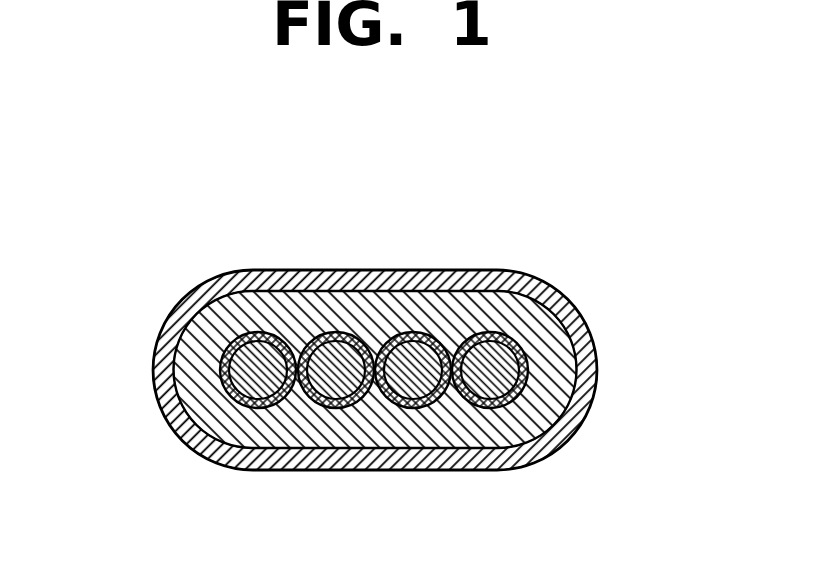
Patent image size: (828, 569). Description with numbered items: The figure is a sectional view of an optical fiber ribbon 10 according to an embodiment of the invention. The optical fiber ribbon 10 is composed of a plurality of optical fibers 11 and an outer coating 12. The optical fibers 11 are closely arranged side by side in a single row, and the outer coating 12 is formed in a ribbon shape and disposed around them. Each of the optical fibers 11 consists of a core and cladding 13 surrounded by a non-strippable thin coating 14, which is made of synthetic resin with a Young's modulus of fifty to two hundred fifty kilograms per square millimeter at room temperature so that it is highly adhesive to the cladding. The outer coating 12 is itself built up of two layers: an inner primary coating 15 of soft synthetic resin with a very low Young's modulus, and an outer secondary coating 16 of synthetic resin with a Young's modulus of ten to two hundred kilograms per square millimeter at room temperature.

The optical fiber ribbon 10 is at (533, 236).
The optical fibers 11 is at (257, 330).
The outer coating 12 is at (153, 388).
The core and cladding 13 is at (532, 338).
The non-strippable thin coating 14 is at (550, 323).
The primary coating 15 is at (533, 408).
The secondary coating 16 is at (552, 443).